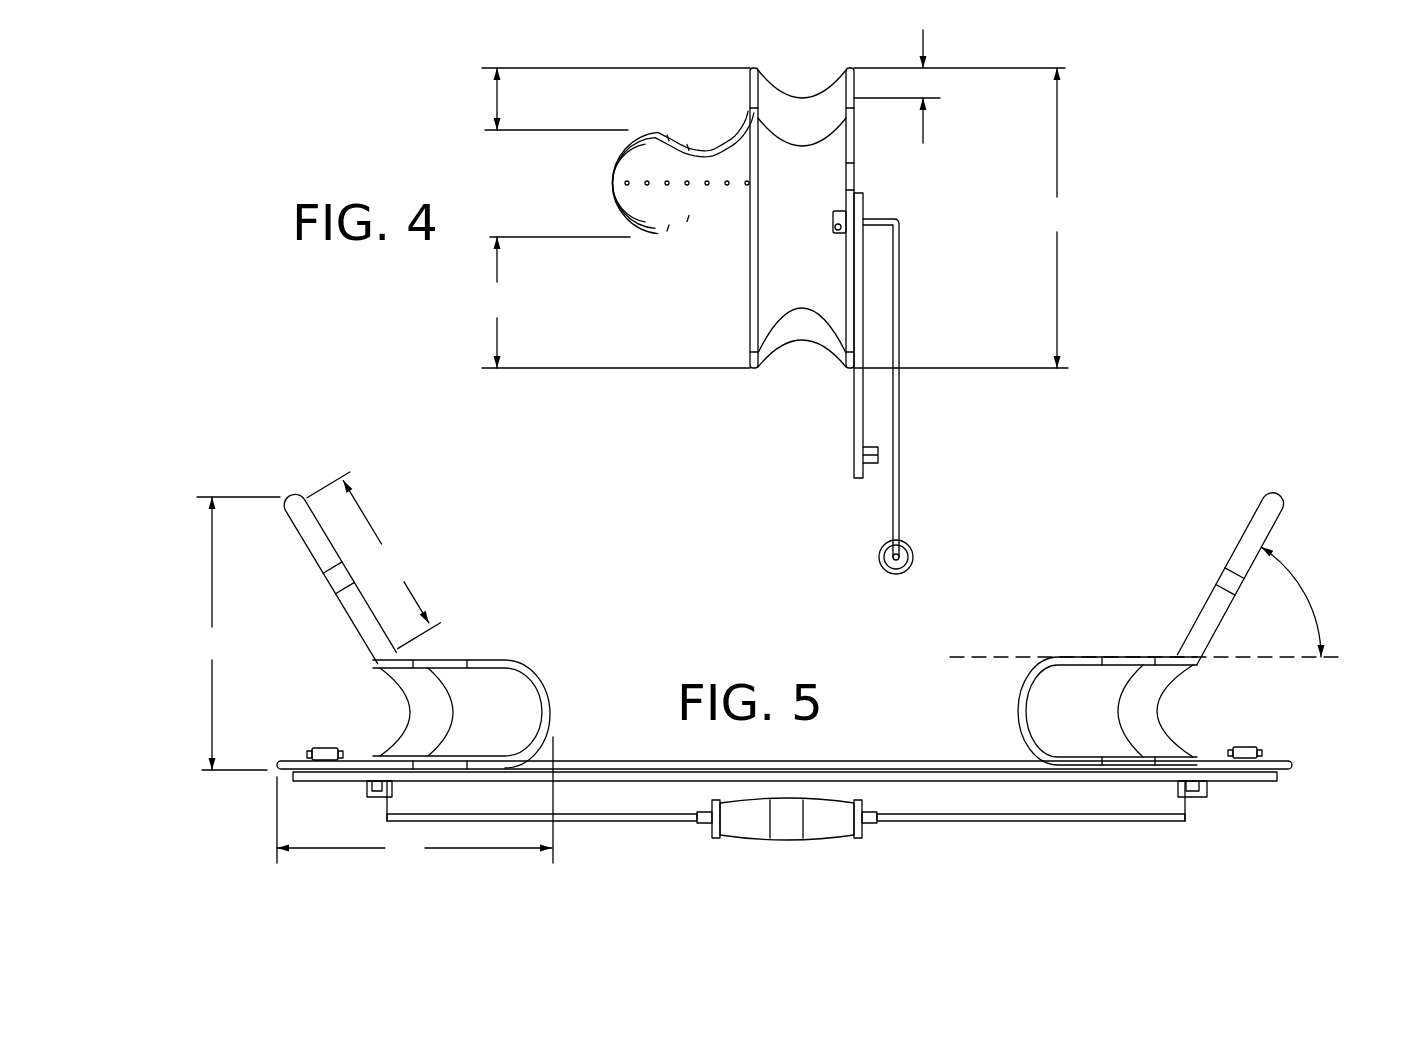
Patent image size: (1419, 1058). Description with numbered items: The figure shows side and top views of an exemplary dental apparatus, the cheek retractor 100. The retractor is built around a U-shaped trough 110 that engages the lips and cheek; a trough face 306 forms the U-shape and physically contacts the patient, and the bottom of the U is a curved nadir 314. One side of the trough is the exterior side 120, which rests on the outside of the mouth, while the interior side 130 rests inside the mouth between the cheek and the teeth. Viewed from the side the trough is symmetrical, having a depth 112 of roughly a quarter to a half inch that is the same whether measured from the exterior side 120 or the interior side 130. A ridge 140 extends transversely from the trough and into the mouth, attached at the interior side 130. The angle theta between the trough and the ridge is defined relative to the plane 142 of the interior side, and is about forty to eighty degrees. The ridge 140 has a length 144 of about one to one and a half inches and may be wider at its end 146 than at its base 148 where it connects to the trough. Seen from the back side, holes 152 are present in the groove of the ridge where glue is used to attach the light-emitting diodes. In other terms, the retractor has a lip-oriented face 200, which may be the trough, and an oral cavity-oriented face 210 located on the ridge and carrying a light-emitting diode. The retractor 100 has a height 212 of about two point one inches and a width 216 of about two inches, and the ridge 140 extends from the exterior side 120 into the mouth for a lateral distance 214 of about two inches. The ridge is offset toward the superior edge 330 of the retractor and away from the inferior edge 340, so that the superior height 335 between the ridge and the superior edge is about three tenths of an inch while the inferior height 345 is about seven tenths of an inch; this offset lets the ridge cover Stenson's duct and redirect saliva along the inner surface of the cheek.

In FIG. 4, the cheek retractor 100 is at (914, 285).
In FIG. 4, the U-shaped trough 110 is at (797, 366).
In FIG. 4, the depth 112 is at (923, 143).
In FIG. 4, the exterior side 120 is at (866, 152).
In FIG. 4, the interior side 130 is at (724, 103).
In FIG. 4, the ridge 140 is at (679, 242).
In FIG. 5, the ridge 140 is at (1238, 520).
In FIG. 5, the plane 142 is at (1282, 660).
In FIG. 5, the length 144 is at (373, 560).
In FIG. 5, the end 146 is at (290, 497).
In FIG. 5, the base 148 is at (373, 666).
In FIG. 4, the holes 152 is at (626, 181).
In FIG. 5, the lip-oriented face 200 is at (1008, 706).
In FIG. 5, the oral cavity-oriented face 210 is at (1185, 592).
In FIG. 4, the height 212 is at (1055, 218).
In FIG. 5, the lateral distance 214 is at (233, 633).
In FIG. 5, the width 216 is at (415, 800).
In FIG. 4, the trough face 306 is at (768, 84).
In FIG. 4, the curved nadir 314 is at (727, 230).
In FIG. 4, the superior edge 330 is at (749, 68).
In FIG. 4, the superior height 335 is at (462, 118).
In FIG. 4, the inferior edge 340 is at (750, 370).
In FIG. 4, the inferior height 345 is at (497, 302).